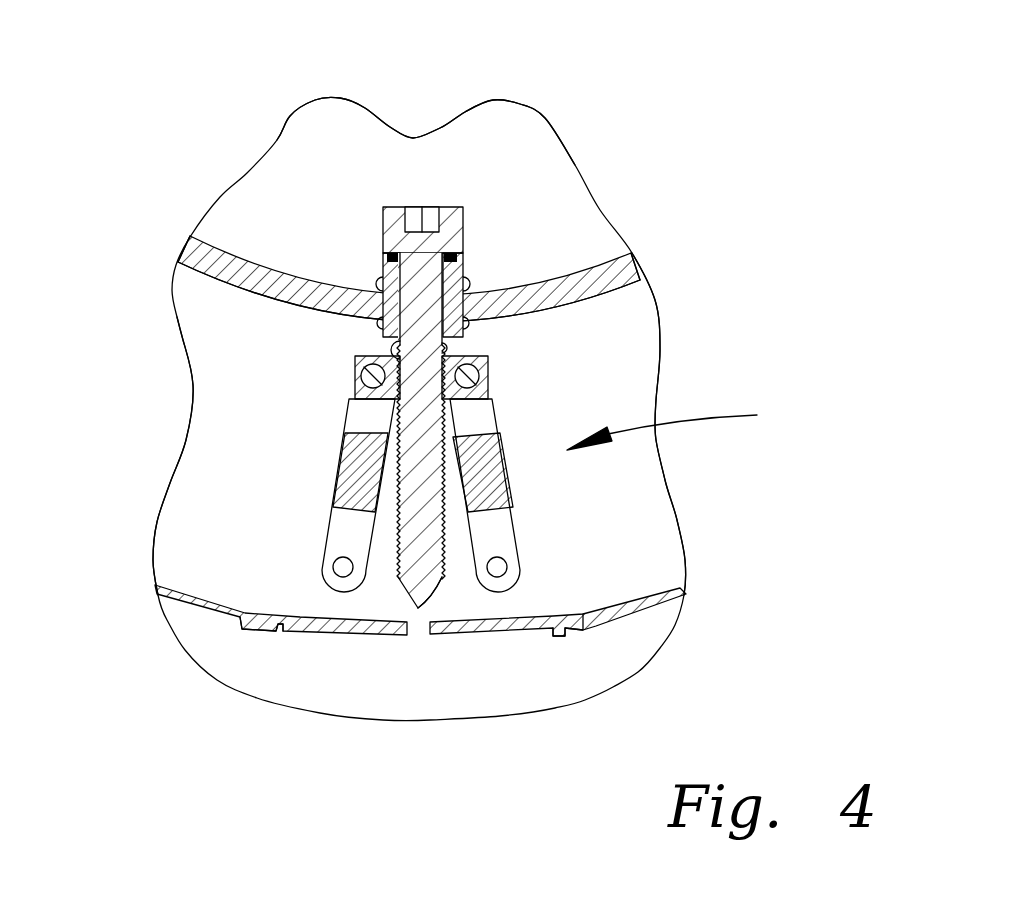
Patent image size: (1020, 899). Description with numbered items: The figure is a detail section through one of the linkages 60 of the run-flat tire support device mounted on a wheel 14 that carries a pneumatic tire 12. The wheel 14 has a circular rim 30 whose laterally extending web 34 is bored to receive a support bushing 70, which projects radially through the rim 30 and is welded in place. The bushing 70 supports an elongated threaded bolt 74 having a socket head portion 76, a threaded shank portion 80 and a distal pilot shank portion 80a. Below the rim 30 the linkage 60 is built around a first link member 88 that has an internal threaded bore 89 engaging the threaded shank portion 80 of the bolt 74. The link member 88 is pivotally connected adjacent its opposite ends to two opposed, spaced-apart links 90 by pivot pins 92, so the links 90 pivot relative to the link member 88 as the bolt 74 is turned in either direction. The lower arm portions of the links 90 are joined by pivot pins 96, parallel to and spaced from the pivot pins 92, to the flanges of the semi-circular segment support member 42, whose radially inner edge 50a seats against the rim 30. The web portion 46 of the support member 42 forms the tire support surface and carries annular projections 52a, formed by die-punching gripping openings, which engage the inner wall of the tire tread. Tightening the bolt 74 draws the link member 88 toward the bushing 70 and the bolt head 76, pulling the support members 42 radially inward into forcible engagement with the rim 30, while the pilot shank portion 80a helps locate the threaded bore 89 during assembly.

The pneumatic tire 12 is at (257, 698).
The wheel 14 is at (552, 120).
The rim 30 is at (243, 257).
The web 34 is at (240, 288).
The segment support member 42 is at (663, 478).
The web portion 46 is at (157, 588).
The radially inner edge 50a is at (192, 275).
The annular projection 52a is at (250, 627).
The linkage 60 is at (684, 431).
The support bushing 70 is at (383, 258).
The threaded bolt 74 is at (400, 577).
The socket head portion 76 is at (444, 208).
The threaded shank portion 80 is at (398, 483).
The pilot shank portion 80a is at (433, 605).
The first link member 88 is at (527, 285).
The internal threaded bore 89 is at (402, 350).
The link 90 is at (347, 437).
The pivot pin 92 is at (357, 362).
The pivot pin 96 is at (343, 568).